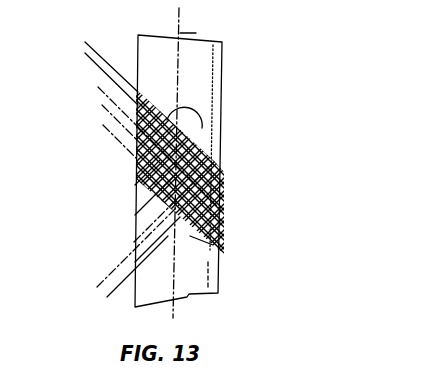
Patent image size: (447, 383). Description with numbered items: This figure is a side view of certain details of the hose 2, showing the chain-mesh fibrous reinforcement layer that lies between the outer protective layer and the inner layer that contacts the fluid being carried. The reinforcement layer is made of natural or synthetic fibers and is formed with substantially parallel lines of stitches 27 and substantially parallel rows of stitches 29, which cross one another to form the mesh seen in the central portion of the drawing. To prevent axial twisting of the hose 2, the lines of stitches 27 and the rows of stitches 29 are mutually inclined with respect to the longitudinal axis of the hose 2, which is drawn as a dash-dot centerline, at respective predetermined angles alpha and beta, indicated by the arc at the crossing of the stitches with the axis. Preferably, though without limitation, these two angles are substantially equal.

The hose 2 is at (233, 97).
The lines of stitches 27 is at (87, 27).
The rows of stitches 29 is at (107, 192).